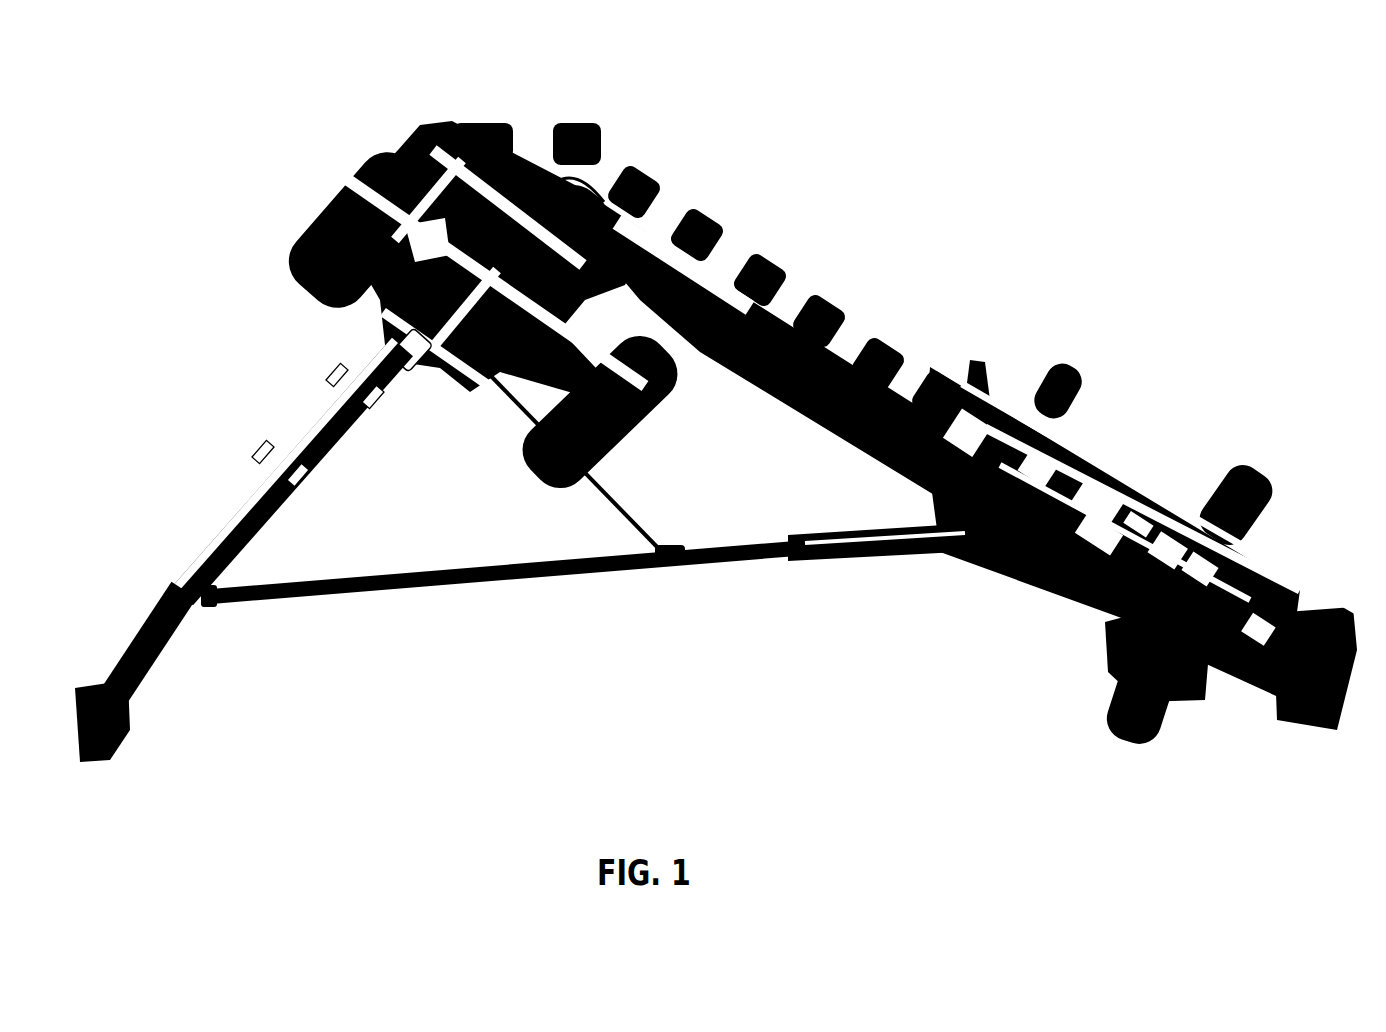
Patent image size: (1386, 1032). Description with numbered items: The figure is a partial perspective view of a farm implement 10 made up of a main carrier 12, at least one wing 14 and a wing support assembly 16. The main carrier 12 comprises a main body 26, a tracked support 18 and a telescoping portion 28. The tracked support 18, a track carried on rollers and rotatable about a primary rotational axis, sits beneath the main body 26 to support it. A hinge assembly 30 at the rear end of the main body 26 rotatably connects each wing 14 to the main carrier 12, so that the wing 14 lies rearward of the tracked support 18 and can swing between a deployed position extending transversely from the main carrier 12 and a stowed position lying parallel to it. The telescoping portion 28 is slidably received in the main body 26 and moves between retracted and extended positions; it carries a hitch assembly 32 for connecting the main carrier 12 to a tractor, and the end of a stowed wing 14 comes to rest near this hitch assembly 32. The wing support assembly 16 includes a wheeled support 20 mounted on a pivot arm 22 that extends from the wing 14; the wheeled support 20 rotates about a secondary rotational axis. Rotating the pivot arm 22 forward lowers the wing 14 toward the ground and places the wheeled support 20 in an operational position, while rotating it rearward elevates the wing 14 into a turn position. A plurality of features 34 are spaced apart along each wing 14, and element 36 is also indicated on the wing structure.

The farm implement 10 is at (715, 434).
The main carrier 12 is at (230, 573).
The wing 14 is at (688, 316).
The wing support assembly 16 is at (1149, 573).
The tracked support 18 is at (437, 338).
The wheeled support 20 is at (1176, 707).
The pivot arm 22 is at (1130, 699).
The main body 26 is at (281, 464).
The telescoping portion 28 is at (120, 640).
The hinge assembly 30 is at (638, 164).
The hitch assembly 32 is at (142, 743).
The features 34 is at (710, 274).
The wing frame rail 36 is at (1160, 498).